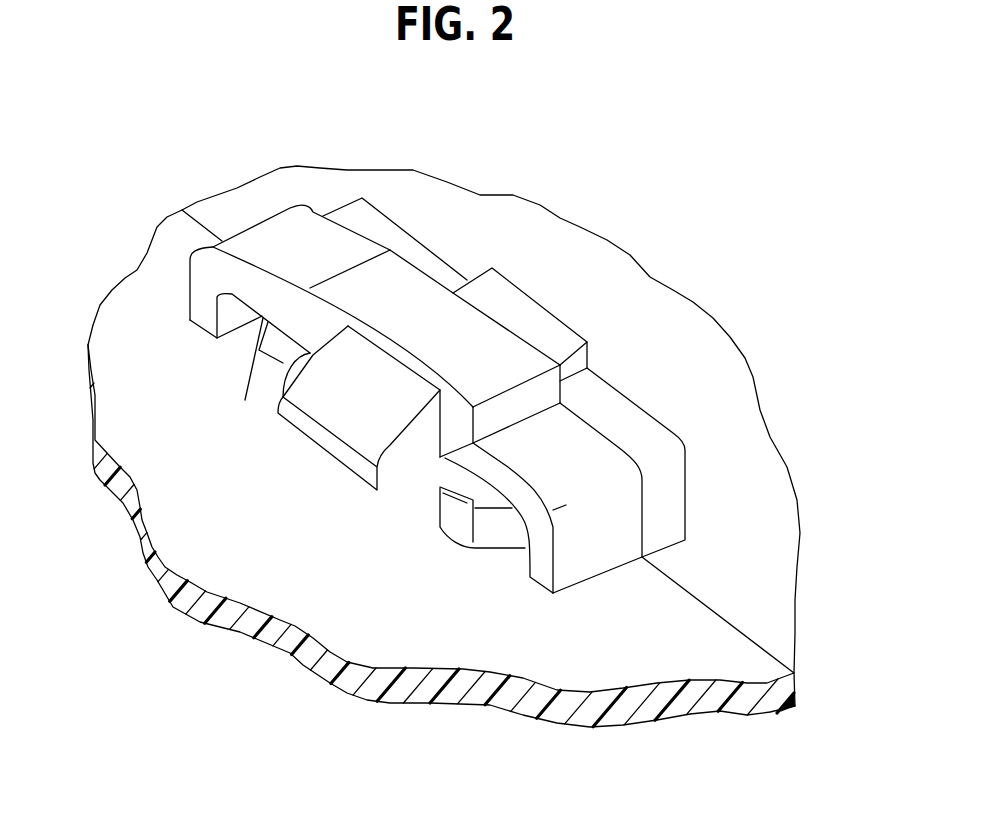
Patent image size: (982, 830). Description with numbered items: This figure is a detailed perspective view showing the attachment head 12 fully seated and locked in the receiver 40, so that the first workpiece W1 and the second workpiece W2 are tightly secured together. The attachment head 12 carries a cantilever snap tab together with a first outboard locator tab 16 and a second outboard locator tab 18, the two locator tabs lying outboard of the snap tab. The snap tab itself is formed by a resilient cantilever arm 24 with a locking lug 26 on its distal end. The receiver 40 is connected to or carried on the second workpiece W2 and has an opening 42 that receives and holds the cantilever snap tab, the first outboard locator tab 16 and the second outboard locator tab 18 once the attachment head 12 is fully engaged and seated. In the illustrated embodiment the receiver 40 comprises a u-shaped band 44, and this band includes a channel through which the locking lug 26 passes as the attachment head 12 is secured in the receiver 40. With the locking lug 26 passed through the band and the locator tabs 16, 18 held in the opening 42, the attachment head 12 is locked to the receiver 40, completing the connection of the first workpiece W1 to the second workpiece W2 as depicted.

The attachment head 12 is at (431, 437).
The first outboard locator tab 16 is at (265, 382).
The second outboard locator tab 18 is at (493, 533).
The resilient cantilever arm 24 is at (532, 320).
The locking lug 26 is at (412, 447).
The receiver 40 is at (222, 229).
The opening 42 is at (233, 312).
The u-shaped band 44 is at (413, 300).
The first workpiece W1 is at (755, 490).
The second workpiece W2 is at (562, 662).